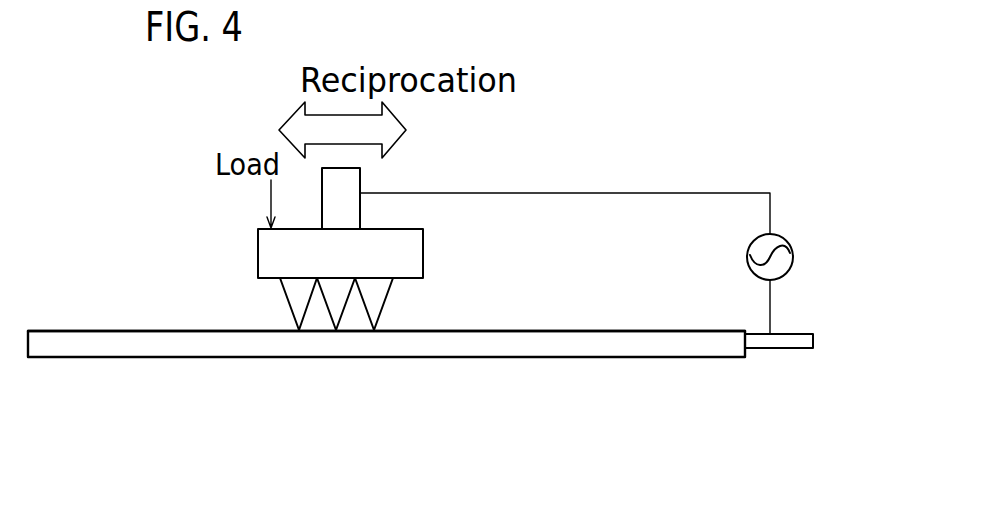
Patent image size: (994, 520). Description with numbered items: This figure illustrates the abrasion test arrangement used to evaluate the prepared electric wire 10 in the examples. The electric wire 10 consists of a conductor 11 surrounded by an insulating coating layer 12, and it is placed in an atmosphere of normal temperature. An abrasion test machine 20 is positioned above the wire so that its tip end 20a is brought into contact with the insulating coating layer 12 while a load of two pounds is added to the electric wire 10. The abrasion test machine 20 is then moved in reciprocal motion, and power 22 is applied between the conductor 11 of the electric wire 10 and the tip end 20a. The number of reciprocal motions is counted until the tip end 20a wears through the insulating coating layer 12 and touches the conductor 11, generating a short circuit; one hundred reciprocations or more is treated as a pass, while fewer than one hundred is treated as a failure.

The electric wire 10 is at (372, 375).
The conductor 11 is at (783, 352).
The insulating coating layer 12 is at (545, 342).
The abrasion test machine 20 is at (427, 253).
The tip end 20a is at (288, 313).
The power 22 is at (793, 250).